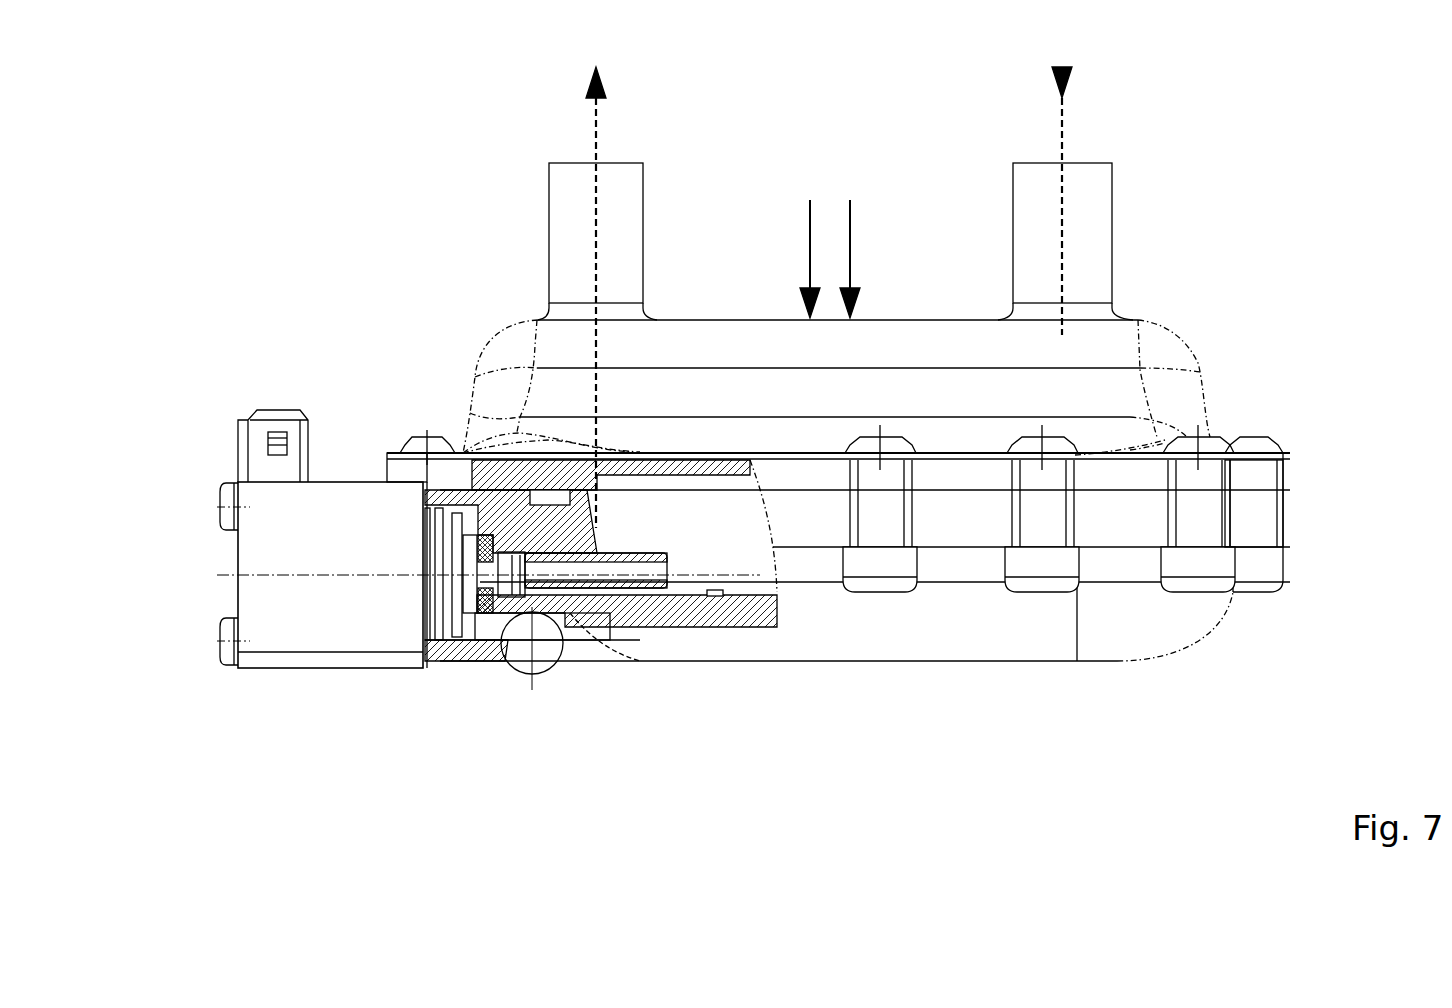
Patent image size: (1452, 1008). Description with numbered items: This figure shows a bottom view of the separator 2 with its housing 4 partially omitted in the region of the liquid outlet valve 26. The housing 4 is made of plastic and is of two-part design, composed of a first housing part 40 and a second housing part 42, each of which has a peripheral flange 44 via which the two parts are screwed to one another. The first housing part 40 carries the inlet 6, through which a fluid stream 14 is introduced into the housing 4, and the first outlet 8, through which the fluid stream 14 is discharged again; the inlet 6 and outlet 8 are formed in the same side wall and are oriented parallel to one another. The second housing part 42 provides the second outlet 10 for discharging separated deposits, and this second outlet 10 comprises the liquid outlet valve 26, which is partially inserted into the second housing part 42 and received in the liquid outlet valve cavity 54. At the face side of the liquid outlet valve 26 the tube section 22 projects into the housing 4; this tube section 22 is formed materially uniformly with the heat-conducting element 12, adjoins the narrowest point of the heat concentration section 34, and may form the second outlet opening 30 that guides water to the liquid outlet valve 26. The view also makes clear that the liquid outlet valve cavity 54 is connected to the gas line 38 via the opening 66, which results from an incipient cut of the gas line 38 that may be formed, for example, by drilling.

The separator 2 is at (810, 237).
The housing 4 is at (850, 237).
The inlet 6 is at (1112, 205).
The first outlet 8 is at (549, 205).
The second outlet 10 is at (435, 678).
The heat-conducting element 12 is at (715, 583).
The fluid stream 14 is at (591, 127).
The tube section 22 is at (645, 597).
The liquid outlet valve 26 is at (238, 548).
The second outlet opening 30 is at (667, 557).
The heat concentration section 34 is at (723, 592).
The gas line 38 is at (560, 665).
The first housing part 40 is at (1207, 396).
The second housing part 42 is at (1183, 627).
The peripheral flange 44 is at (1290, 477).
The liquid outlet valve cavity 54 is at (475, 632).
The opening 66 is at (503, 640).